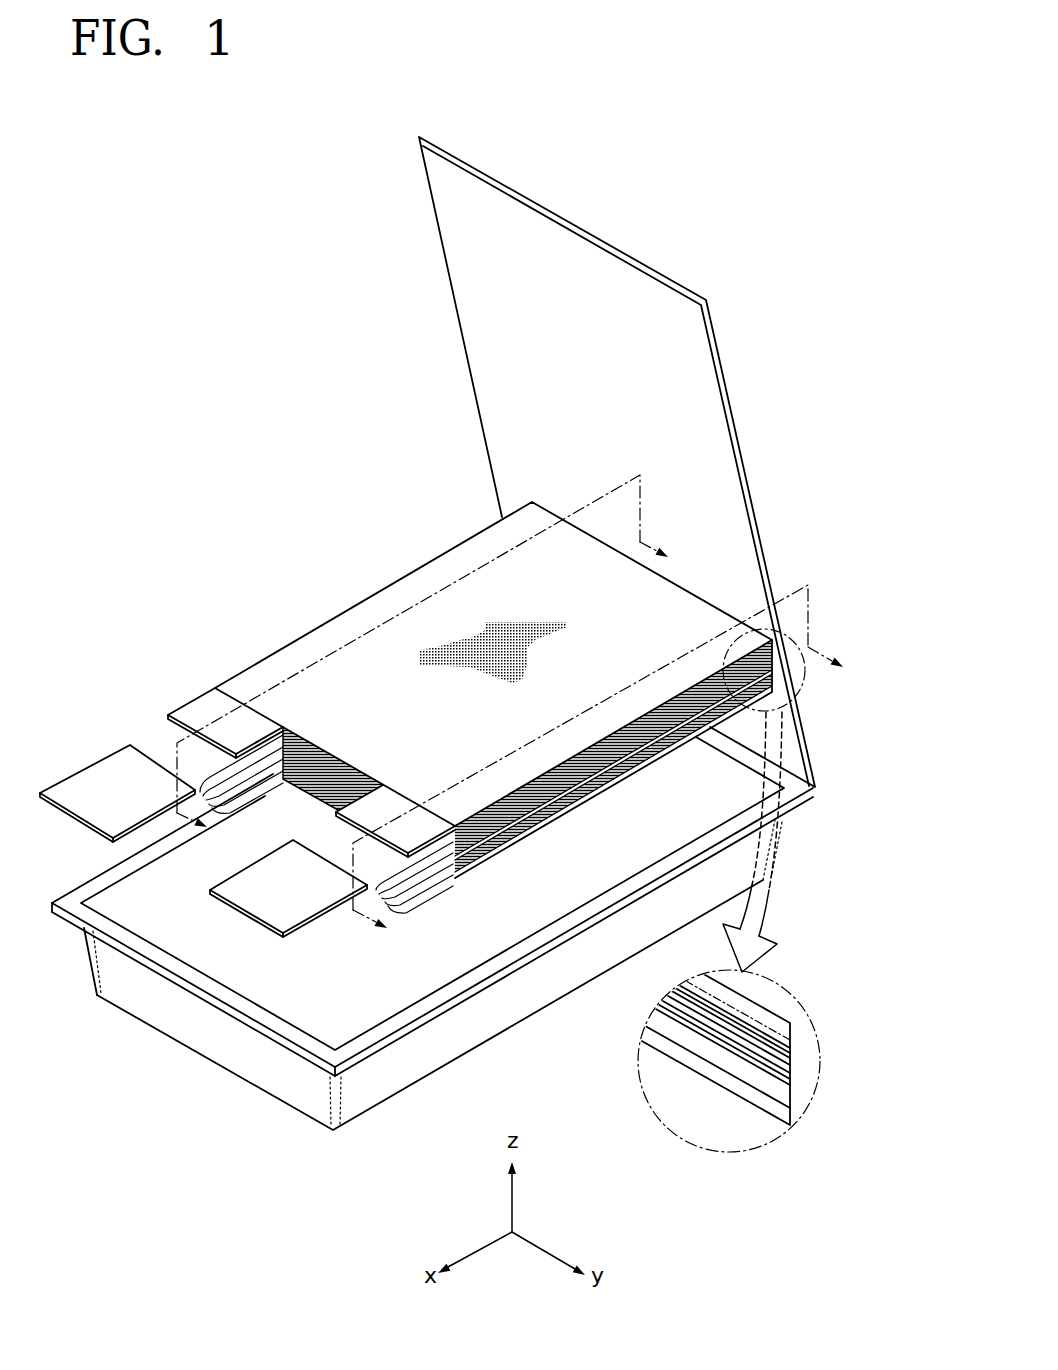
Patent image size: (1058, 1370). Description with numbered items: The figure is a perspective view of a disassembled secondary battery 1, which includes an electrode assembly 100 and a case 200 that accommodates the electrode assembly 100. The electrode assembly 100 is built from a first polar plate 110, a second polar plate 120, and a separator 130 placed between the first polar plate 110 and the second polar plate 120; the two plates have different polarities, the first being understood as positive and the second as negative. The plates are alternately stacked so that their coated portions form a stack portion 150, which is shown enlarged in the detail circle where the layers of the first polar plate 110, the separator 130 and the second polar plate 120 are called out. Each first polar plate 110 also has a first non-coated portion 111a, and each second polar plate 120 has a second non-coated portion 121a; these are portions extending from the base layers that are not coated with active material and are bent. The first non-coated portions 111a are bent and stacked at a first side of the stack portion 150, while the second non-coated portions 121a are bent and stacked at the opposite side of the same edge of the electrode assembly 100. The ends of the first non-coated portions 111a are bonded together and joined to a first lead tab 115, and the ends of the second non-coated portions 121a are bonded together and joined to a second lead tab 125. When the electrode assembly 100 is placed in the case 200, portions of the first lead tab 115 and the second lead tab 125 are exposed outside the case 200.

The secondary battery 1 is at (222, 262).
The electrode assembly 100 is at (346, 566).
The first polar plate 110 is at (308, 662).
The first non-coated portion 111a is at (205, 722).
The first lead tab 115 is at (110, 777).
The second polar plate 120 is at (473, 823).
The second non-coated portion 121a is at (423, 890).
The second lead tab 125 is at (240, 882).
The separator 130 is at (784, 1045).
The stack portion 150 is at (870, 997).
The case 200 is at (405, 1086).